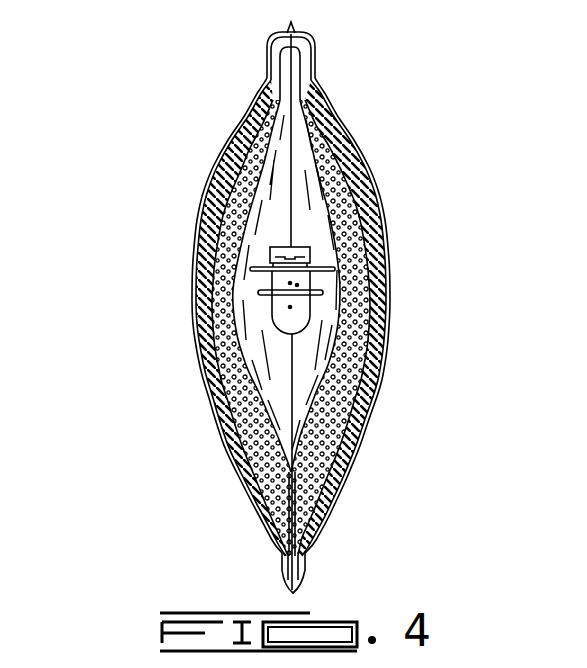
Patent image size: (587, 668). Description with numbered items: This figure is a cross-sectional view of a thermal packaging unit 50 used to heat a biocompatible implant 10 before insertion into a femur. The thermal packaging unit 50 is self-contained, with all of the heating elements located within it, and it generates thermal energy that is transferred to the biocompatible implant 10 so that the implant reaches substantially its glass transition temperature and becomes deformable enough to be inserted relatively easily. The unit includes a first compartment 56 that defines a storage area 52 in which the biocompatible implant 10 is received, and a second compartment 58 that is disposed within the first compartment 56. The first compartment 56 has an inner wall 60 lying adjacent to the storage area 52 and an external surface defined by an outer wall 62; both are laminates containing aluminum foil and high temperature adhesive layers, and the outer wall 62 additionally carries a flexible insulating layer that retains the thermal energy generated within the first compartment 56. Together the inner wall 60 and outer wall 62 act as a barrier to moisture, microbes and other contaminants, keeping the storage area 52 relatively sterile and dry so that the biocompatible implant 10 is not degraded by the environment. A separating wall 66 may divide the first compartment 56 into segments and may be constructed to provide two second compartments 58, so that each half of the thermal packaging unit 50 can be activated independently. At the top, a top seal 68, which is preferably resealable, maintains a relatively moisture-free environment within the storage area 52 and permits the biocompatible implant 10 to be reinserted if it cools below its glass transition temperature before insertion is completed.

The thermal packaging unit 50 is at (222, 84).
The top seal 68 is at (288, 27).
The storage area 52 is at (262, 141).
The first compartment 56 is at (246, 156).
The second compartment 58 is at (212, 226).
The biocompatible implant 10 is at (270, 283).
The inner wall 60 is at (233, 397).
The outer wall 62 is at (227, 437).
The separating wall 66 is at (263, 498).